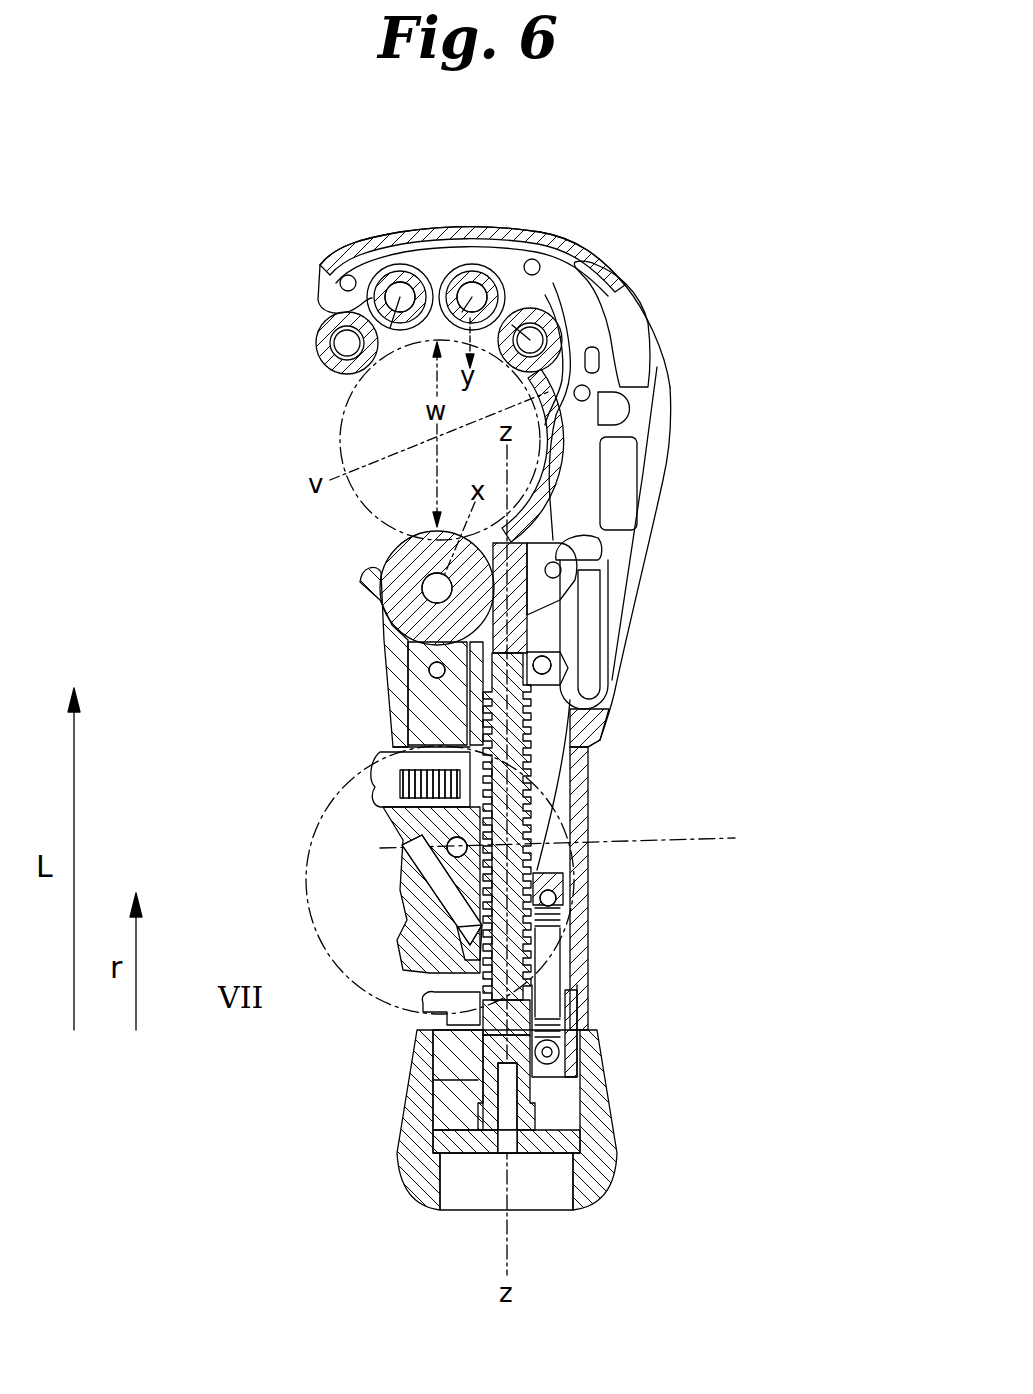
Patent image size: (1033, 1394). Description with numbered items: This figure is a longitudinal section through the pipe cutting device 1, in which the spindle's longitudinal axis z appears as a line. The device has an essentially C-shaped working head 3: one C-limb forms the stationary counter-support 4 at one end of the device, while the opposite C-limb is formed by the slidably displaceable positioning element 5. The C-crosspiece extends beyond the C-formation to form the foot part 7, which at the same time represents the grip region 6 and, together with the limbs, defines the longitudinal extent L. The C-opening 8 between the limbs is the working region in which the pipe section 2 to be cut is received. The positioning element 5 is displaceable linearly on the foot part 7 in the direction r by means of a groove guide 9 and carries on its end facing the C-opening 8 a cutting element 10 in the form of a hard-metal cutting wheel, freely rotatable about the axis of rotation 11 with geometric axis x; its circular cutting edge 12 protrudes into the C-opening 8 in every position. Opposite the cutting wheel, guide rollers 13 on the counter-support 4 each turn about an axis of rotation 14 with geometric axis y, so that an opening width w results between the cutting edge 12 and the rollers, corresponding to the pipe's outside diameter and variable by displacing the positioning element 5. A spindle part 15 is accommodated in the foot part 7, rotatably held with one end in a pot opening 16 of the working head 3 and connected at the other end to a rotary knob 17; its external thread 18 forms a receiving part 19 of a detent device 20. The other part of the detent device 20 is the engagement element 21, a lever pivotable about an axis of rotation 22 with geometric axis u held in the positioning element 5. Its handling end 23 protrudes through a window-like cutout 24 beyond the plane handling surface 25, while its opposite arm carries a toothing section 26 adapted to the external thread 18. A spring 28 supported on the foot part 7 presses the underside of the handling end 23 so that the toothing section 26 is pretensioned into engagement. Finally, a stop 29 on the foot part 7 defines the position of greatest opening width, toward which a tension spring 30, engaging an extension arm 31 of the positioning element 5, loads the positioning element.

The pipe cutting device 1 is at (698, 212).
The pipe section 2 is at (335, 440).
The working head 3 is at (676, 404).
The counter-support 4 is at (455, 238).
The positioning element 5 is at (392, 667).
The grip region 6 is at (580, 812).
The foot part 7 is at (578, 989).
The C-opening 8 is at (326, 409).
The groove guide 9 is at (497, 1005).
The cutting element 10 is at (380, 600).
The axis of rotation 11 is at (393, 562).
The cutting edge 12 is at (418, 545).
The guide rollers 13 is at (398, 292).
The axis of rotation 14 is at (349, 343).
The spindle part 15 is at (510, 737).
The pot opening 16 is at (548, 660).
The rotary knob 17 is at (585, 1177).
The external thread 18 is at (528, 762).
The receiving part 19 is at (548, 893).
The detent device 20 is at (483, 1003).
The engagement element 21 is at (447, 850).
The axis of rotation 22 is at (448, 888).
The handling end 23 is at (445, 808).
The window-like cutout 24 is at (465, 743).
The handling surface 25 is at (392, 703).
The toothing section 26 is at (462, 950).
The spring 28 is at (400, 788).
The stop 29 is at (425, 1085).
The spring 30 is at (580, 1033).
The extension arm 31 is at (556, 905).